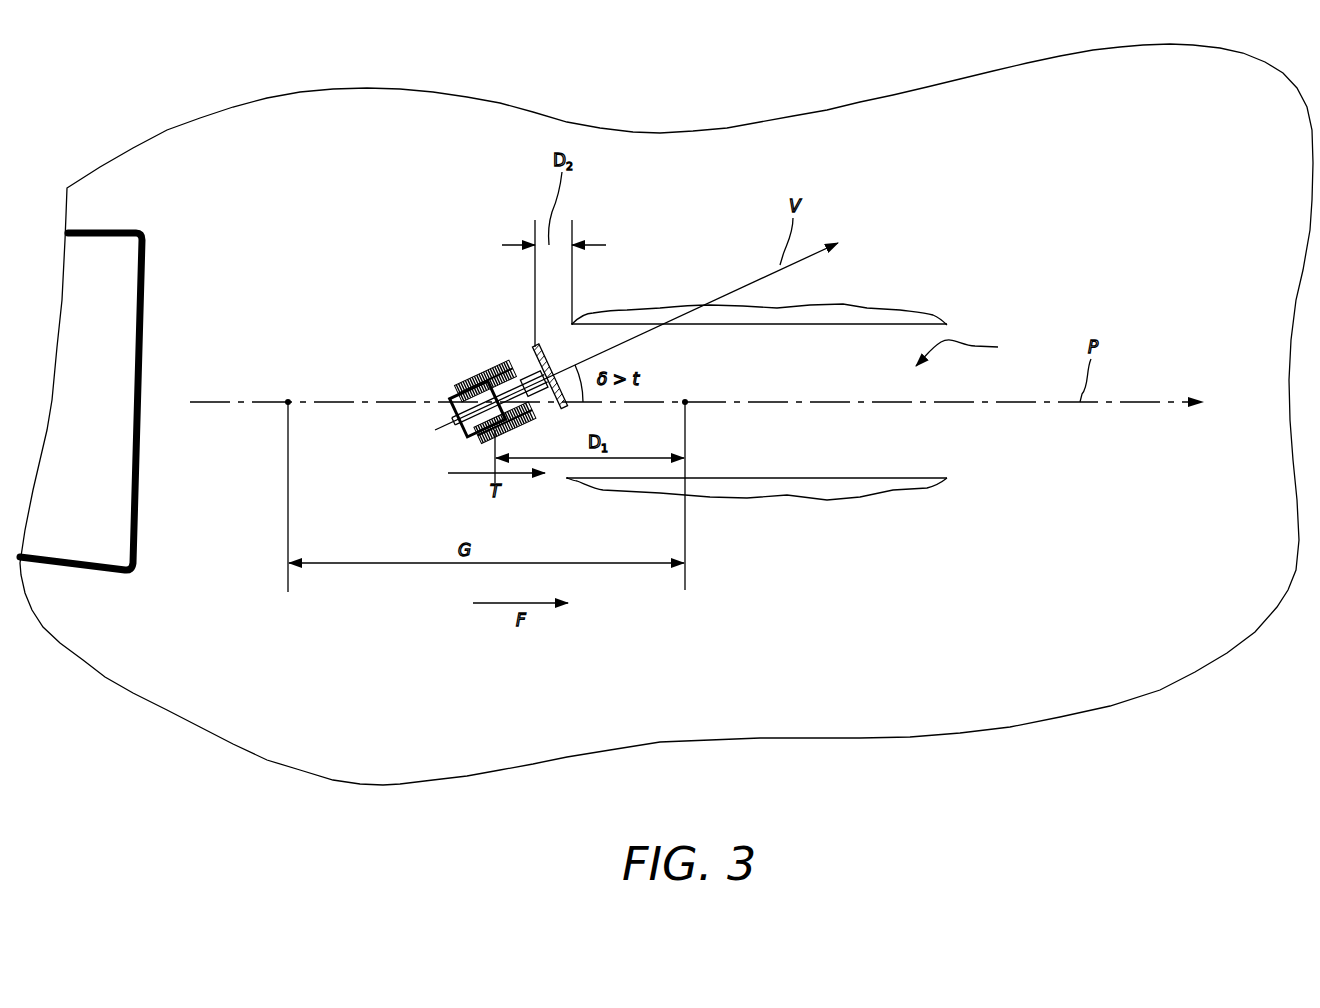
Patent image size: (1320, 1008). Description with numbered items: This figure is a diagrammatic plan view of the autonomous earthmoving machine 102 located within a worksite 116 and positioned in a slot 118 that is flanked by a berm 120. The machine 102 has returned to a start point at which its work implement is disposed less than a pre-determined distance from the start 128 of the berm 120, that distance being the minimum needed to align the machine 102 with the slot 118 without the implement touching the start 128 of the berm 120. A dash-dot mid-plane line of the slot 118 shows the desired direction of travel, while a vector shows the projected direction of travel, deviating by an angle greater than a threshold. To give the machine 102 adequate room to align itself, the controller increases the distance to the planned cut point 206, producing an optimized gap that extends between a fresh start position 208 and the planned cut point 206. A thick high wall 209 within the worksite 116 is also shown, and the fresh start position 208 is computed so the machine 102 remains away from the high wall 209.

The autonomous earthmoving machine 102 is at (466, 408).
The worksite 116 is at (1138, 199).
The slot 118 is at (976, 351).
The berm 120 is at (835, 324).
The start of the berm 128 is at (573, 322).
The planned cut point 206 is at (687, 404).
The fresh start position 208 is at (286, 403).
The high wall 209 is at (144, 292).